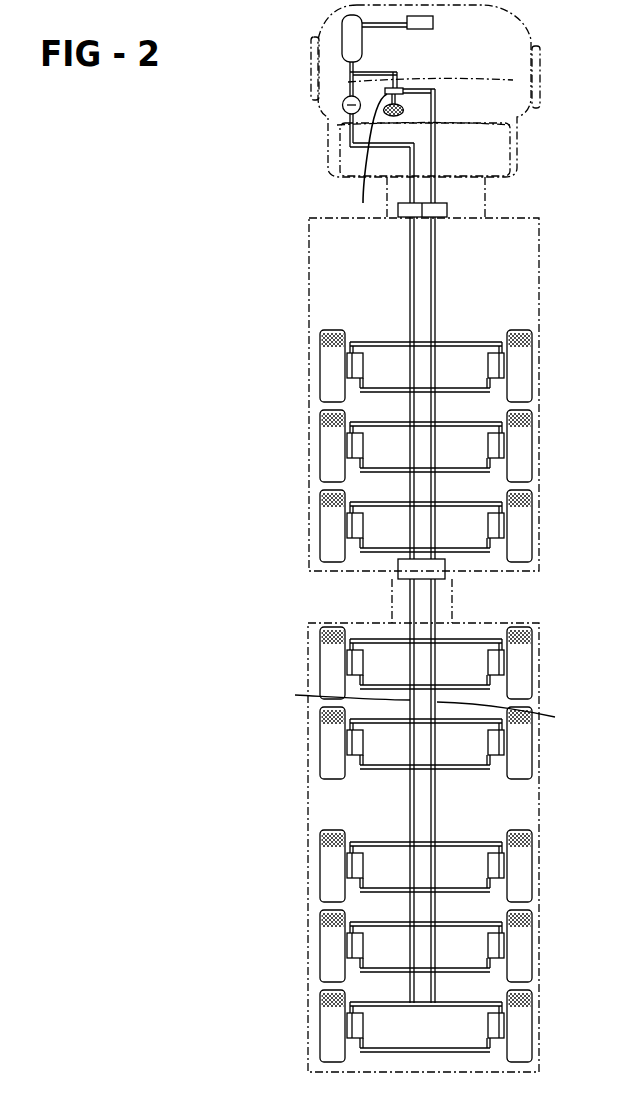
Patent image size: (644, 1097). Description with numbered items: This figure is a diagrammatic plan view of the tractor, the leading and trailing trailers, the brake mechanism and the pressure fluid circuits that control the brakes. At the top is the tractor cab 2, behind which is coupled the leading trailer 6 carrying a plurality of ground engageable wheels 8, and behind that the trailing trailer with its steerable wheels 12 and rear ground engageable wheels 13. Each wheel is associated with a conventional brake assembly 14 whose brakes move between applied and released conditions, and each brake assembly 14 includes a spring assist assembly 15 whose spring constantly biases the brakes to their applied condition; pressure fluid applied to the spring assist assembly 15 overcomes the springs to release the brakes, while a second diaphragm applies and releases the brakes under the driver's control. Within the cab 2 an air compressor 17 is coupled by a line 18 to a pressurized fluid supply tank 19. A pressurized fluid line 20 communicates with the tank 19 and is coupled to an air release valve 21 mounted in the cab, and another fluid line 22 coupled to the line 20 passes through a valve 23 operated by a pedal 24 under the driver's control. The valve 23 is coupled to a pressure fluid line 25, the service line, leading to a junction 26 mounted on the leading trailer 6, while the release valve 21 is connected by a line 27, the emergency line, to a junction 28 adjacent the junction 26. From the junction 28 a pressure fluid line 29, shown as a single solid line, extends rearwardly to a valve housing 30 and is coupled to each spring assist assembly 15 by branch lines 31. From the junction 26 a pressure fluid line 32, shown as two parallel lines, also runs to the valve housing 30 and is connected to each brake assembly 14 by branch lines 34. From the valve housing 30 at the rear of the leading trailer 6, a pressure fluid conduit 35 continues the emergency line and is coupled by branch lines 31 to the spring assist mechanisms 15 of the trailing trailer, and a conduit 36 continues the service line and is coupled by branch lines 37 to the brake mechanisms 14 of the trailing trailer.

The cab 2 is at (580, 84).
The leading trailer 6 is at (559, 256).
The ground engageable wheels 8 is at (523, 437).
The steerable wheels 12 is at (315, 667).
The rear ground engageable wheels 13 is at (318, 870).
The brake assembly 14 is at (500, 450).
The spring assist assembly 15 is at (487, 445).
The air compressor 17 is at (420, 29).
The line 18 is at (366, 28).
The pressurized fluid supply tank 19 is at (338, 38).
The pressurized fluid line 20 is at (348, 83).
The air release valve 21 is at (345, 107).
The fluid line 22 is at (397, 83).
The valve 23 is at (362, 176).
The pedal 24 is at (405, 114).
The pressure fluid line 25 is at (435, 170).
The junction 26 is at (448, 213).
The line 27 is at (407, 185).
The junction 28 is at (397, 213).
The pressure fluid line 29 is at (410, 310).
The valve housing 30 is at (397, 573).
The branch lines 31 is at (383, 388).
The pressure fluid line 32 is at (435, 288).
The branch lines 34 is at (385, 424).
The pressure fluid conduit 35 is at (341, 693).
The conduit 36 is at (508, 714).
The branch lines 37 is at (483, 842).